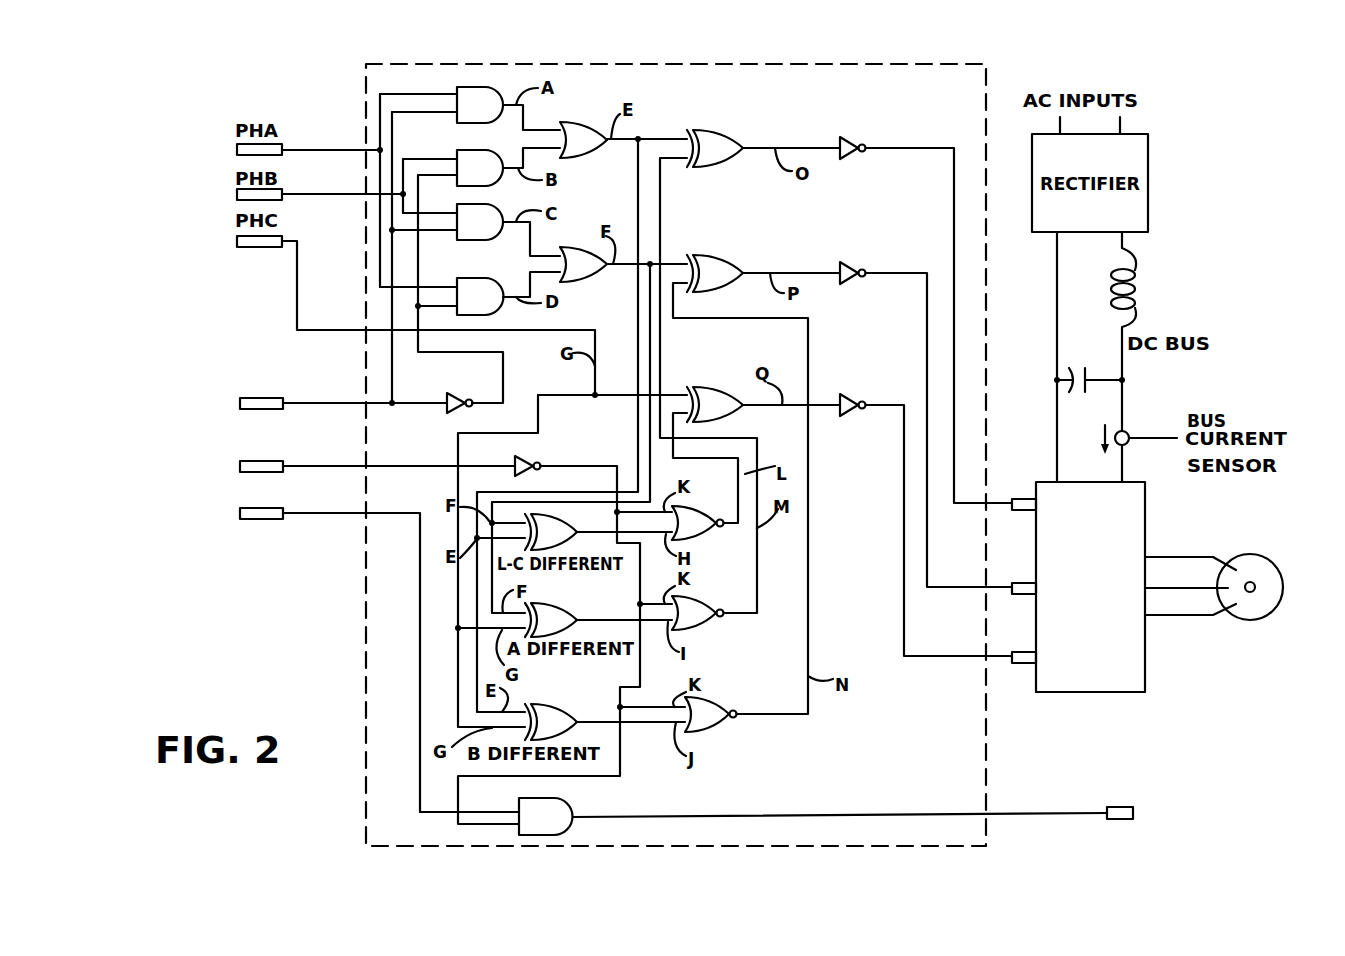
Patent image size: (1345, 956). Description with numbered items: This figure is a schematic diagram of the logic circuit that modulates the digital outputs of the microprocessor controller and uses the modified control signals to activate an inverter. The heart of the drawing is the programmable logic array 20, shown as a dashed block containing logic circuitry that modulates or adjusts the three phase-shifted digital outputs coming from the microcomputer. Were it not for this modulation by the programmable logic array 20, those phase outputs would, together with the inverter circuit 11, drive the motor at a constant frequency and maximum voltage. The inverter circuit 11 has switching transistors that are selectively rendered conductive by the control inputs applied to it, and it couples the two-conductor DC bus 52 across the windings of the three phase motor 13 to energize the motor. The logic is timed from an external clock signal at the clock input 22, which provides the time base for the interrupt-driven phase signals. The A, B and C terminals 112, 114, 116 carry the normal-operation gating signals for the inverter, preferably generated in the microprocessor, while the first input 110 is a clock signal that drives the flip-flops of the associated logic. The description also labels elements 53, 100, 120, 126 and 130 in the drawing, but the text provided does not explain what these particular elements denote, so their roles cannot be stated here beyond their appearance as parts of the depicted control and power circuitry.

The programmable logic array 20 is at (790, 126).
The clock input 22 is at (1103, 812).
The DC bus 52 is at (1122, 337).
The bus current sensor 53 is at (1130, 432).
The current limit input 100 is at (240, 471).
The input 1 110 is at (999, 498).
The A terminal 112 is at (945, 583).
The B terminal 114 is at (928, 652).
The C terminal 116 is at (420, 632).
The clock gating AND gate 120 is at (577, 806).
The reversing input 126 is at (283, 408).
The current limit inverter 130 is at (522, 458).
The inverter circuit 11 is at (1093, 692).
The three phase motor 13 is at (1283, 574).